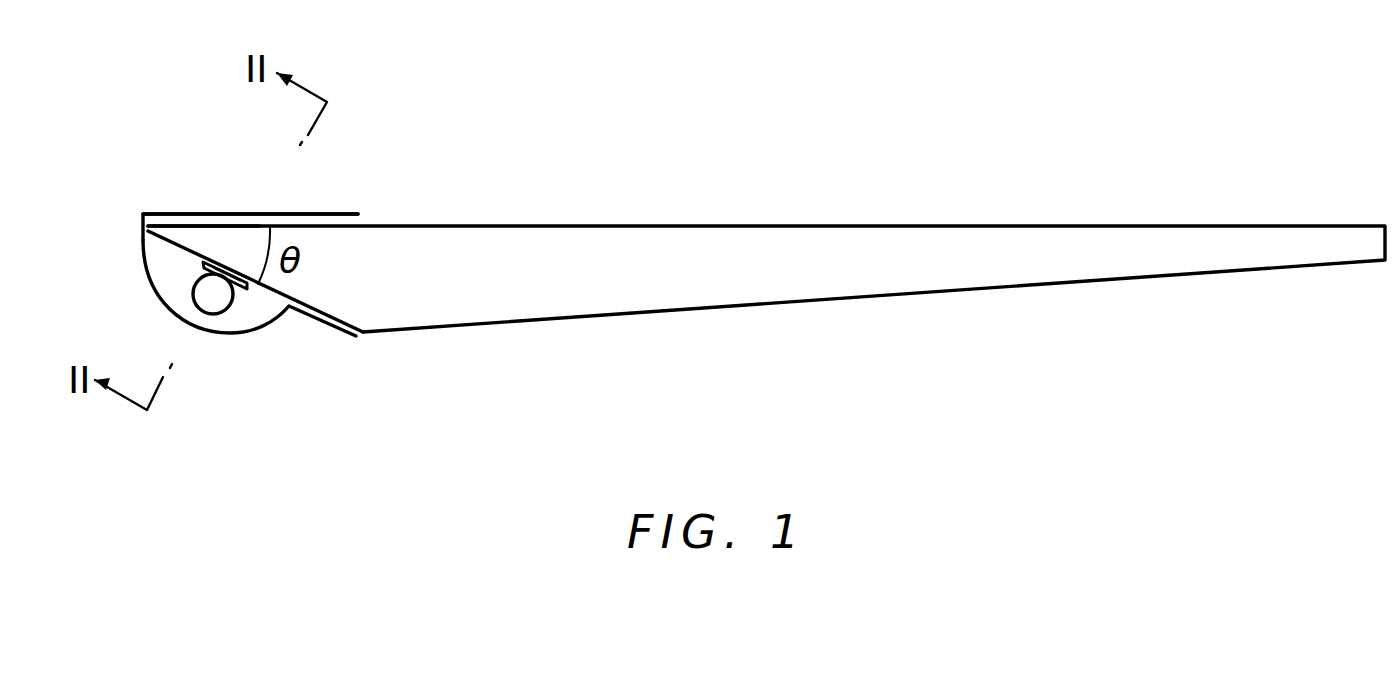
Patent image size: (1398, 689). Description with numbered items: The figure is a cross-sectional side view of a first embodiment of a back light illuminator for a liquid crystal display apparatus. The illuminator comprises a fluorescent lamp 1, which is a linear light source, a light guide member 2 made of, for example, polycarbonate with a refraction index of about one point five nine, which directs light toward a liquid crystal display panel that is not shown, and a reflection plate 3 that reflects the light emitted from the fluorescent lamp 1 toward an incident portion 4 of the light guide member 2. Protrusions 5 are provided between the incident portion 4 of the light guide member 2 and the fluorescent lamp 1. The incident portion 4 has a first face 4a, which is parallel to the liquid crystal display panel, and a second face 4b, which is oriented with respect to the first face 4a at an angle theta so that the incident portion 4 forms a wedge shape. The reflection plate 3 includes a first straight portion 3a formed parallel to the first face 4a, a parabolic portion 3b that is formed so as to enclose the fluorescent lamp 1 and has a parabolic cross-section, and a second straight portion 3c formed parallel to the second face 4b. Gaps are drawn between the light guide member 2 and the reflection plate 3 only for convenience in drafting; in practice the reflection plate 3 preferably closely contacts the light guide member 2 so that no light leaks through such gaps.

The fluorescent lamp 1 is at (207, 314).
The light guide member 2 is at (535, 320).
The reflection plate 3 is at (141, 311).
The first straight portion 3a is at (170, 214).
The parabolic portion 3b is at (140, 262).
The second straight portion 3c is at (330, 325).
The incident portion 4 is at (325, 248).
The first face 4a is at (206, 226).
The second face 4b is at (258, 285).
The protrusions 5 is at (235, 262).